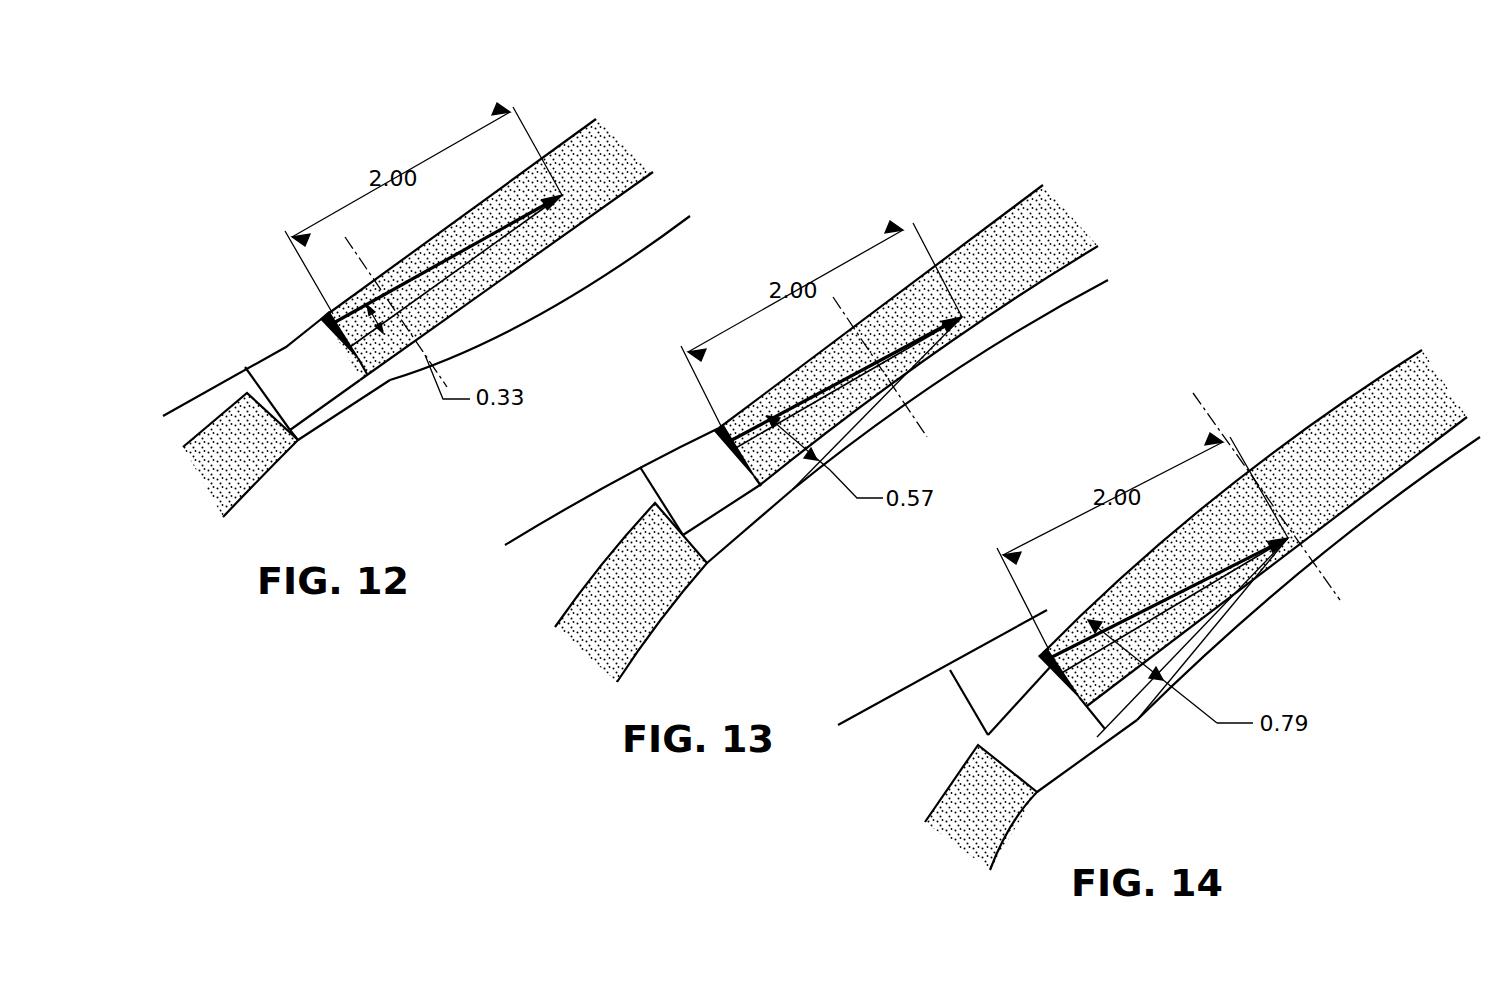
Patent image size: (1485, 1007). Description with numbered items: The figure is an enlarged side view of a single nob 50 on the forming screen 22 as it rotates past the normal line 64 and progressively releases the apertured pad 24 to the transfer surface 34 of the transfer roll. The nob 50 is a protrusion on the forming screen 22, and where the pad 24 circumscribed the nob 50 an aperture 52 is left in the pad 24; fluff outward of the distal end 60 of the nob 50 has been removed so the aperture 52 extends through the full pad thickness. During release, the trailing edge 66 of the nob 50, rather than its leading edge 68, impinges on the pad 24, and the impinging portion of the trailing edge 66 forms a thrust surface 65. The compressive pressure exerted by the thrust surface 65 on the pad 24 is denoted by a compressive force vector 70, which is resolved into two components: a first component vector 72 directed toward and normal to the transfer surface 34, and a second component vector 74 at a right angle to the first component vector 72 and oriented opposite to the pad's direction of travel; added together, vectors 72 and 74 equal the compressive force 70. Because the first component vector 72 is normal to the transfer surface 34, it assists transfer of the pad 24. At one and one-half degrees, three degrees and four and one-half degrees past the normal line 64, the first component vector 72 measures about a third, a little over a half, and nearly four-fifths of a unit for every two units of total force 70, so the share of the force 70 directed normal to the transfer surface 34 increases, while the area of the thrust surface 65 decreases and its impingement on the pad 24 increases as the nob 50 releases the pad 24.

In FIG. 12, the forming screen 22 is at (188, 400).
In FIG. 13, the forming screen 22 is at (522, 537).
In FIG. 14, the forming screen 22 is at (862, 708).
In FIG. 12, the pad 24 is at (593, 153).
In FIG. 13, the pad 24 is at (1047, 235).
In FIG. 14, the pad 24 is at (1425, 385).
In FIG. 12, the transfer surface 34 is at (593, 252).
In FIG. 13, the transfer surface 34 is at (1056, 305).
In FIG. 14, the transfer surface 34 is at (1450, 452).
In FIG. 12, the nob 50 is at (303, 403).
In FIG. 13, the nob 50 is at (693, 518).
In FIG. 14, the nob 50 is at (962, 677).
In FIG. 12, the aperture 52 is at (302, 440).
In FIG. 13, the aperture 52 is at (753, 508).
In FIG. 14, the aperture 52 is at (1097, 733).
In FIG. 12, the distal end 60 is at (332, 408).
In FIG. 13, the distal end 60 is at (724, 512).
In FIG. 14, the distal end 60 is at (1030, 715).
In FIG. 12, the normal line 64 is at (426, 342).
In FIG. 13, the normal line 64 is at (903, 392).
In FIG. 14, the normal line 64 is at (1302, 545).
In FIG. 12, the thrust surface 65 is at (341, 313).
In FIG. 13, the thrust surface 65 is at (735, 438).
In FIG. 14, the thrust surface 65 is at (1076, 698).
In FIG. 12, the trailing edge 66 is at (368, 374).
In FIG. 13, the trailing edge 66 is at (735, 430).
In FIG. 14, the trailing edge 66 is at (1042, 633).
In FIG. 12, the leading edge 68 is at (258, 393).
In FIG. 13, the leading edge 68 is at (642, 480).
In FIG. 14, the leading edge 68 is at (970, 708).
In FIG. 12, the compressive force vector 70 is at (440, 264).
In FIG. 13, the compressive force vector 70 is at (822, 390).
In FIG. 14, the compressive force vector 70 is at (1160, 604).
In FIG. 12, the first component vector 72 is at (358, 366).
In FIG. 13, the first component vector 72 is at (792, 490).
In FIG. 14, the first component vector 72 is at (1137, 722).
In FIG. 12, the second component vector 74 is at (472, 270).
In FIG. 13, the second component vector 74 is at (935, 352).
In FIG. 14, the second component vector 74 is at (1217, 628).